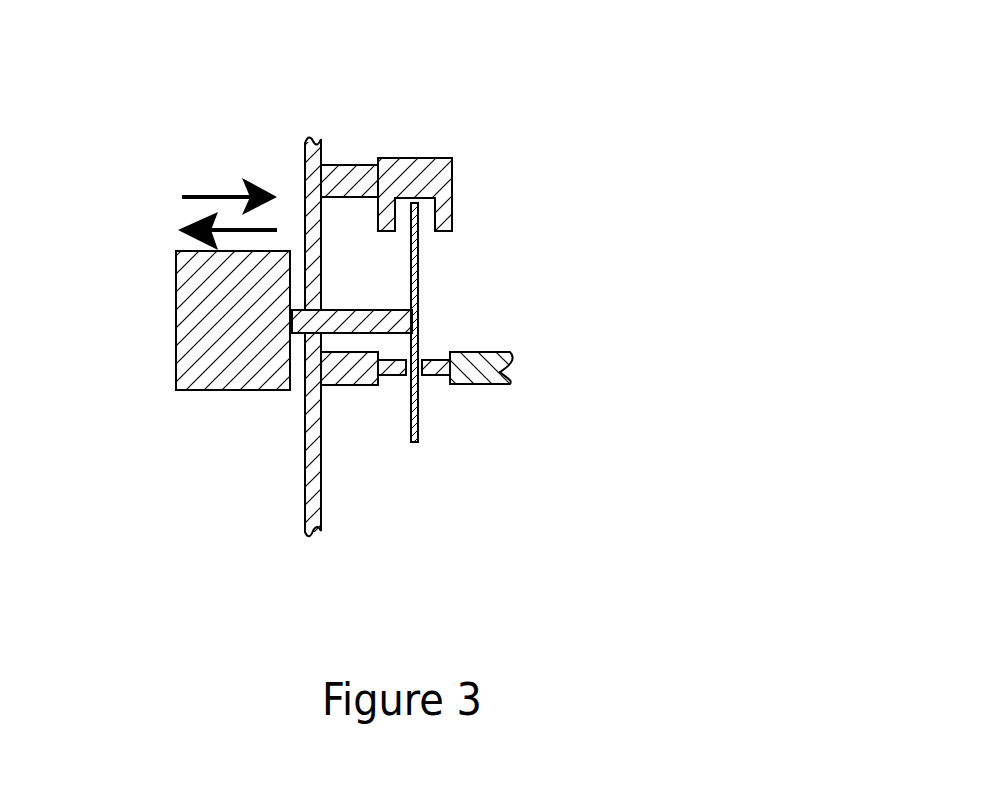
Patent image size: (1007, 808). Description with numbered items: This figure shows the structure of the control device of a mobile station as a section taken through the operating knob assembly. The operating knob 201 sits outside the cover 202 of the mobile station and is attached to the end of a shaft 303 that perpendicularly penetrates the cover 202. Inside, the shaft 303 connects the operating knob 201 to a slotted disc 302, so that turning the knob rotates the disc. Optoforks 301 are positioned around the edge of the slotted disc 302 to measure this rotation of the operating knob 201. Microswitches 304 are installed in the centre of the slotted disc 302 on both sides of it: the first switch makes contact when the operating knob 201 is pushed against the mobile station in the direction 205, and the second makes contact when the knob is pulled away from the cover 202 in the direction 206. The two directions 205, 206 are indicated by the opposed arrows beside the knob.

The operating knob 201 is at (200, 390).
The cover 202 is at (308, 452).
The direction 205 is at (227, 195).
The direction 206 is at (187, 222).
The optoforks 301 is at (452, 185).
The slotted disc 302 is at (418, 262).
The shaft 303 is at (412, 325).
The microswitches 304 is at (437, 375).